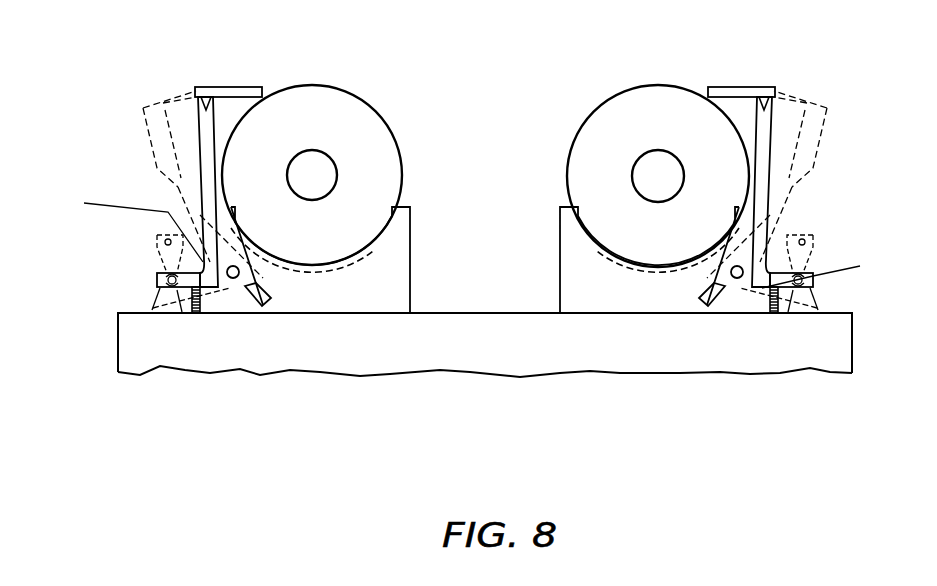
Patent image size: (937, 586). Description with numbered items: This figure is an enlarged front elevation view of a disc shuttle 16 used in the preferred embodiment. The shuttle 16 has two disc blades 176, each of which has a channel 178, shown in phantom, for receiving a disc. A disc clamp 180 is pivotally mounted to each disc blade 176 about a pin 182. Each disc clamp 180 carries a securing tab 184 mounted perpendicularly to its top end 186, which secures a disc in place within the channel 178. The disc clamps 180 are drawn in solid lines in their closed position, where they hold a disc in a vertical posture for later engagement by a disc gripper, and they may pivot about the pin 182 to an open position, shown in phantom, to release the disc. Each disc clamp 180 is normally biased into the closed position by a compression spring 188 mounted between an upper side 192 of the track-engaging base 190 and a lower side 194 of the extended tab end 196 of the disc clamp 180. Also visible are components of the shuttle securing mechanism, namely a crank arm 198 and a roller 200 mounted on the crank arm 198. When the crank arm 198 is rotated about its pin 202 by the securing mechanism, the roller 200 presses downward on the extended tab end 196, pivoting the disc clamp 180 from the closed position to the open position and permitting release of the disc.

The shuttle 16 is at (115, 338).
The disc blade 176 is at (398, 288).
The channel 178 is at (373, 251).
The disc clamp 180 is at (157, 167).
The pin 182 is at (233, 279).
The securing tab 184 is at (206, 107).
The top end 186 is at (214, 96).
The compression spring 188 is at (197, 314).
The track-engaging base 190 is at (388, 367).
The upper side 192 is at (153, 309).
The lower side 194 is at (212, 292).
The extended tab end 196 is at (162, 275).
The crank arm 198 is at (157, 250).
The roller 200 is at (157, 278).
The pin 202 is at (472, 239).